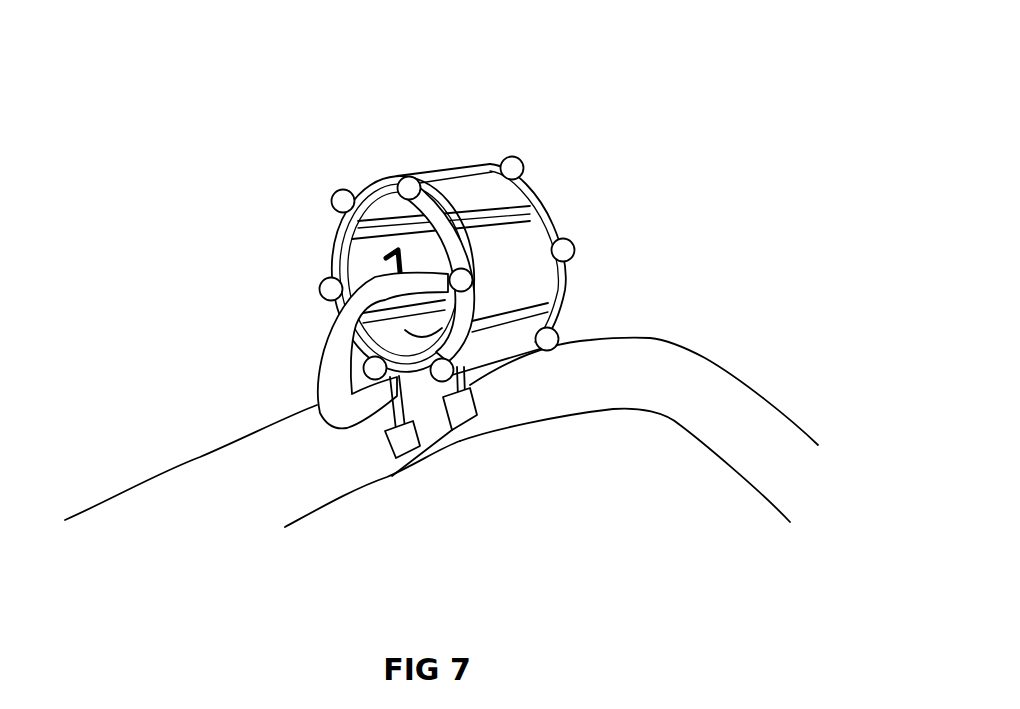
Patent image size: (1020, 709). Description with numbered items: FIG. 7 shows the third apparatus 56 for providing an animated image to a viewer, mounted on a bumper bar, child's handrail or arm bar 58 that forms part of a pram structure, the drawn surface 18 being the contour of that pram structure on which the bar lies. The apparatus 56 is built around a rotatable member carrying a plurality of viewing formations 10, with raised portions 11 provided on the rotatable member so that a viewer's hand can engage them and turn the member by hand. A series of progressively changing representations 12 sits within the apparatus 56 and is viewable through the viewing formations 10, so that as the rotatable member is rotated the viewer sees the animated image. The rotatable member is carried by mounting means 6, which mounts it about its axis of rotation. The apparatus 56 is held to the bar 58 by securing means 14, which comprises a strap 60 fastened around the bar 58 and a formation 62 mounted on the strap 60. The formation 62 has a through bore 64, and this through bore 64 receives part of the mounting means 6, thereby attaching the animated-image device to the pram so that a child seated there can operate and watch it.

The third apparatus 56 is at (516, 202).
The progressively changing representations 12 is at (394, 336).
The raised portions 11 is at (325, 285).
The viewing formations 10 is at (508, 314).
The mounting means 6 is at (324, 348).
The body surface 18 is at (797, 386).
The bumper bar/child's handrail/arm bar 58 is at (628, 375).
The strap 60 is at (423, 442).
The formation 62 is at (467, 426).
The through bore 64 is at (390, 410).
The securing means 14 is at (404, 500).